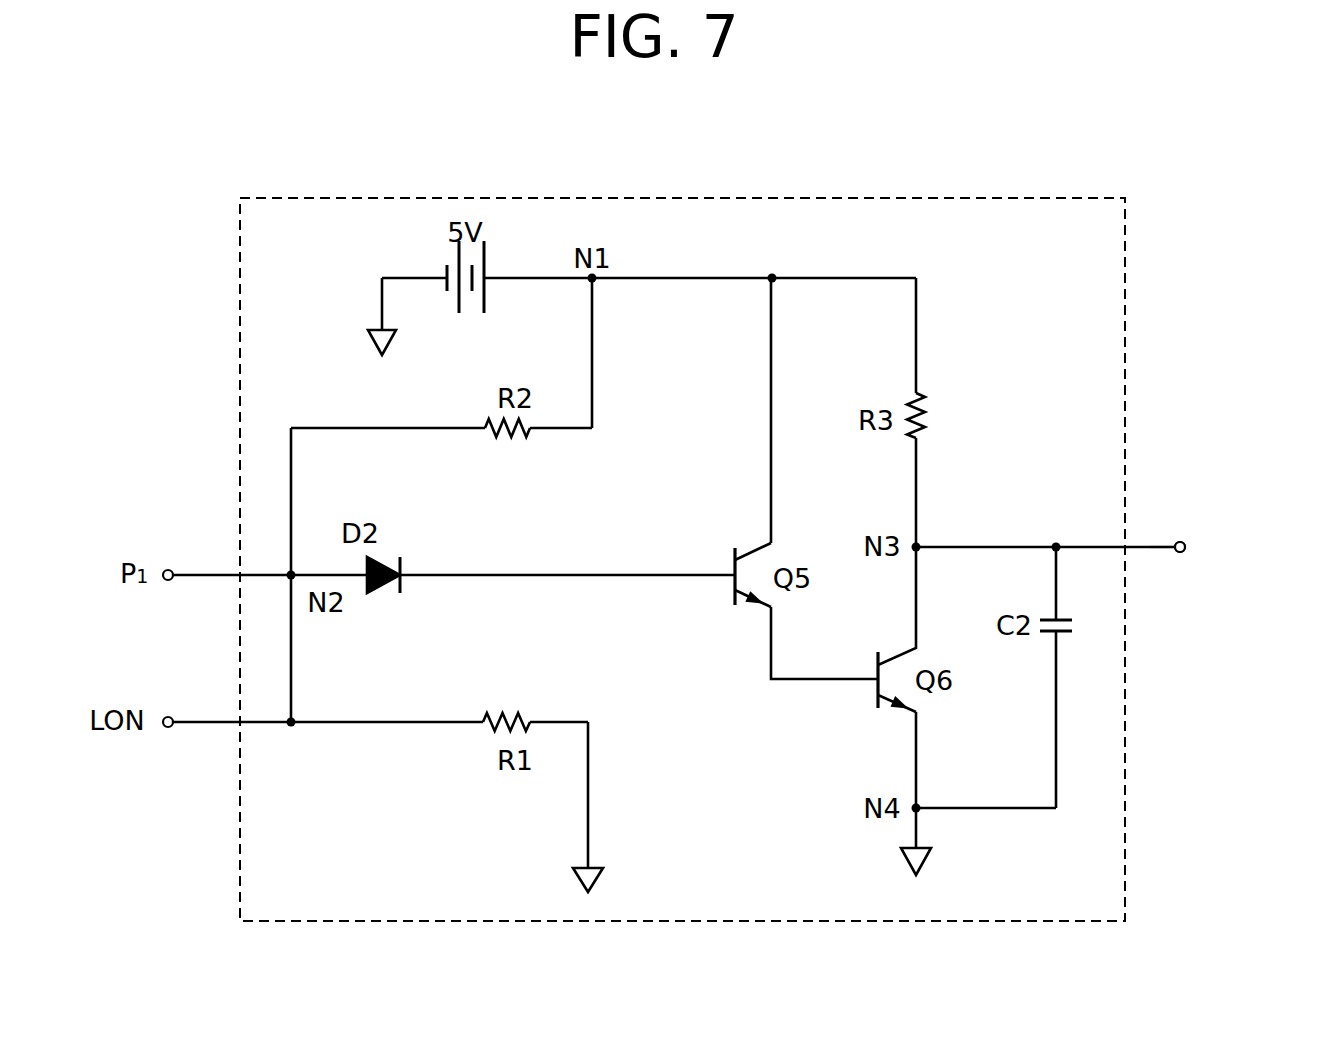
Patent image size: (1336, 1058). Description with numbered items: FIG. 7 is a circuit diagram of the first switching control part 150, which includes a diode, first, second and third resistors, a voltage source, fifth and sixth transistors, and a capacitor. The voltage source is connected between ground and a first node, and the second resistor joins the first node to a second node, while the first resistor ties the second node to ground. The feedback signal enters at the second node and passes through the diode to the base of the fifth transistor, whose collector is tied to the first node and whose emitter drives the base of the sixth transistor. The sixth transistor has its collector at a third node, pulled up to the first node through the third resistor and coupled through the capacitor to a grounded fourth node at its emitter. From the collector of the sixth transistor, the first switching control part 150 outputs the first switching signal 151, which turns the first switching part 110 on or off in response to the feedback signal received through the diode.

The first switching control part 150 is at (658, 169).
The first switching signal 151 is at (1150, 547).
The first switching part 110 is at (1244, 545).